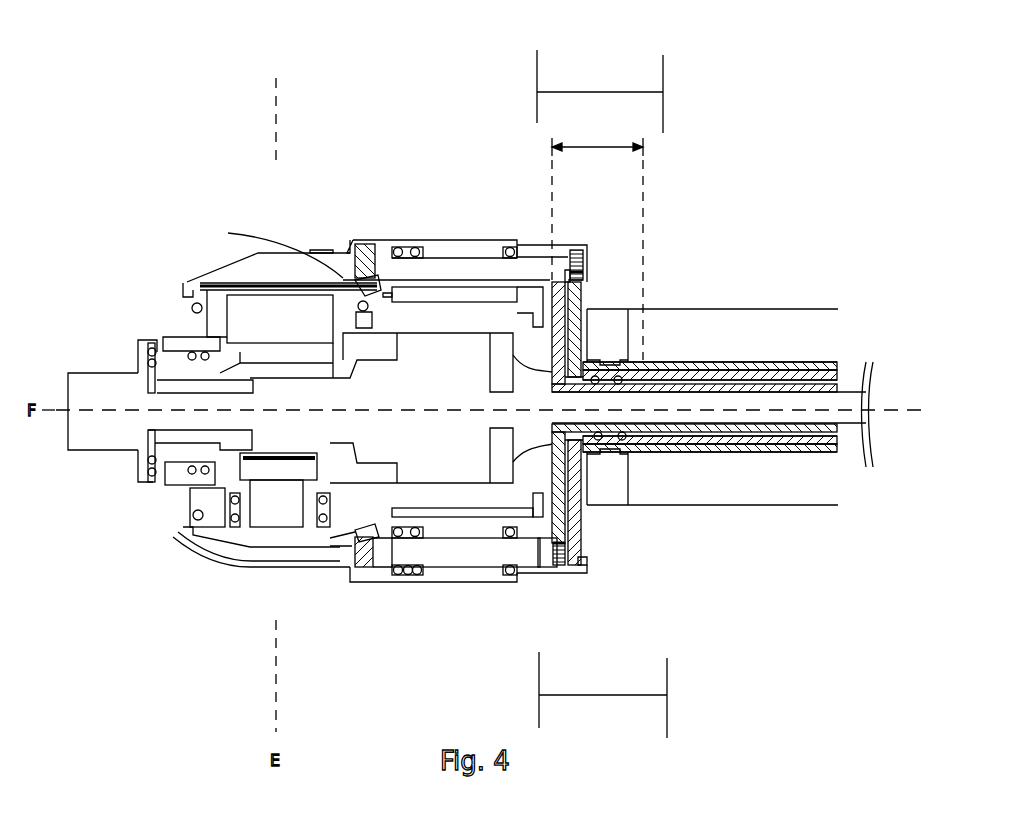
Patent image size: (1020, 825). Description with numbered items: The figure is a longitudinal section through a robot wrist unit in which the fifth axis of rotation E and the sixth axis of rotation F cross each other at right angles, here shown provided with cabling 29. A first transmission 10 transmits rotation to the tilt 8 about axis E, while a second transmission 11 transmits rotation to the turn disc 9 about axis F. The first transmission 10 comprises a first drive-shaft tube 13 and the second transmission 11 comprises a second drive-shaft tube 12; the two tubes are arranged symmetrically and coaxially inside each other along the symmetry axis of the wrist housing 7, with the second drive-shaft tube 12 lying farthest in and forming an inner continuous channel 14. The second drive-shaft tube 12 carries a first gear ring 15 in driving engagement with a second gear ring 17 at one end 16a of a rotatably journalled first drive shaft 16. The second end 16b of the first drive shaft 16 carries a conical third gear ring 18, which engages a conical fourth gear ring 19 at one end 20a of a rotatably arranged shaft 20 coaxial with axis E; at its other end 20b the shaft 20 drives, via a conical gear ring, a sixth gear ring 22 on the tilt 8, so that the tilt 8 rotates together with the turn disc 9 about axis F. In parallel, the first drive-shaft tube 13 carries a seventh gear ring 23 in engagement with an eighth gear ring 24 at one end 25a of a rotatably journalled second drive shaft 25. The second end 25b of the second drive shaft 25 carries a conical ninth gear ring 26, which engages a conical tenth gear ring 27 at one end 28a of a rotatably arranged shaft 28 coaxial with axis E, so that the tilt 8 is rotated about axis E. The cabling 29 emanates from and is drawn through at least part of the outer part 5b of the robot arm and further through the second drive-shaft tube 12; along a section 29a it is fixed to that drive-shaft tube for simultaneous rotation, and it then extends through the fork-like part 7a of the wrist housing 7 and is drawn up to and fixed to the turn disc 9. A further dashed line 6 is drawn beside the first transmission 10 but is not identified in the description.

The outer part of the robot arm 5b is at (773, 308).
The boundary line 6 is at (630, 223).
The wrist housing 7 is at (505, 243).
The fork-like part of the wrist housing 7a is at (332, 252).
The tilt 8 is at (167, 450).
The turn disc 9 is at (138, 340).
The first transmission 10 is at (562, 227).
The second transmission 11 is at (512, 585).
The second drive-shaft tube 12 is at (671, 436).
The first drive-shaft tube 13 is at (680, 370).
The inner continuous channel 14 is at (717, 413).
The first gear ring 15 is at (567, 532).
The first drive shaft 16 is at (468, 556).
The one end of the first drive shaft 16a is at (548, 558).
The second end of the first drive shaft 16b is at (378, 552).
The second gear ring 17 is at (587, 570).
The third gear ring 18 is at (365, 555).
The fourth gear ring 19 is at (223, 543).
The shaft 20 is at (260, 467).
The one end of the shaft 20a is at (293, 540).
The other end of the shaft 20b is at (238, 527).
The sixth gear ring 22 is at (235, 463).
The seventh gear ring 23 is at (578, 290).
The eighth gear ring 24 is at (586, 250).
The second drive shaft 25 is at (462, 270).
The one end of the second drive shaft 25a is at (558, 274).
The second end of the second drive shaft 25b is at (377, 273).
The ninth gear ring 26 is at (371, 246).
The tenth gear ring 27 is at (191, 282).
The shaft 28 is at (190, 284).
The one end of the shaft 28a is at (293, 286).
The cabling 29 is at (423, 406).
The section of the cabling 29a is at (597, 140).